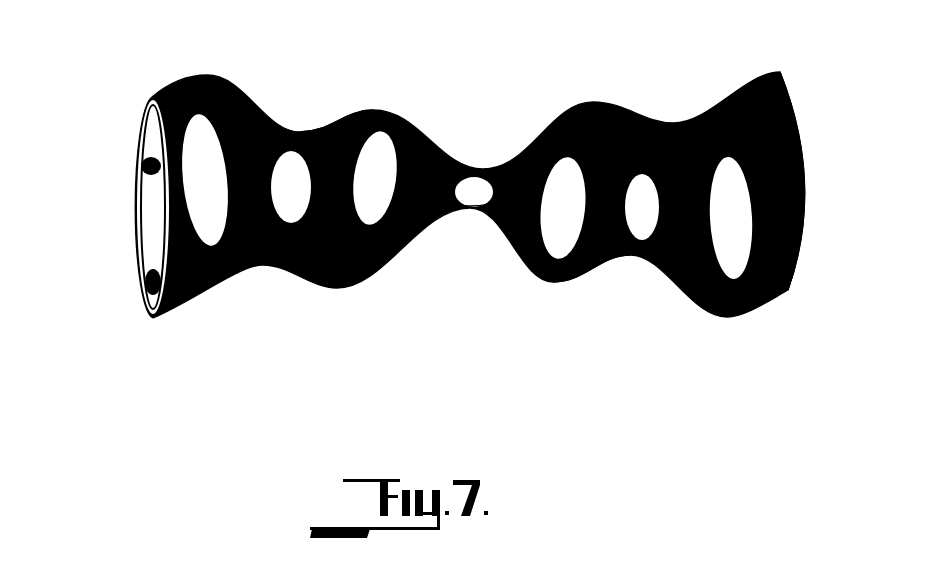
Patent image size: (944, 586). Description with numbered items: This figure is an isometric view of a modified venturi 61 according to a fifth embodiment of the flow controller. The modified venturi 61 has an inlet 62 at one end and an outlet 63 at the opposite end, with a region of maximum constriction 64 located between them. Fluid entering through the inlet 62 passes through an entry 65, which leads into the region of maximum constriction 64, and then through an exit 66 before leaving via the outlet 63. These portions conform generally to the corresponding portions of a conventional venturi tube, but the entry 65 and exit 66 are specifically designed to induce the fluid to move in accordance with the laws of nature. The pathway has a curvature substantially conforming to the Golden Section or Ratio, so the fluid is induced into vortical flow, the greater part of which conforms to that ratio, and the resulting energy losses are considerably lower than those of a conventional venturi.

The modified venturi 61 is at (542, 78).
The inlet 62 is at (134, 173).
The outlet 63 is at (803, 138).
The region of maximum constriction 64 is at (470, 222).
The entry 65 is at (335, 117).
The exit 66 is at (593, 273).